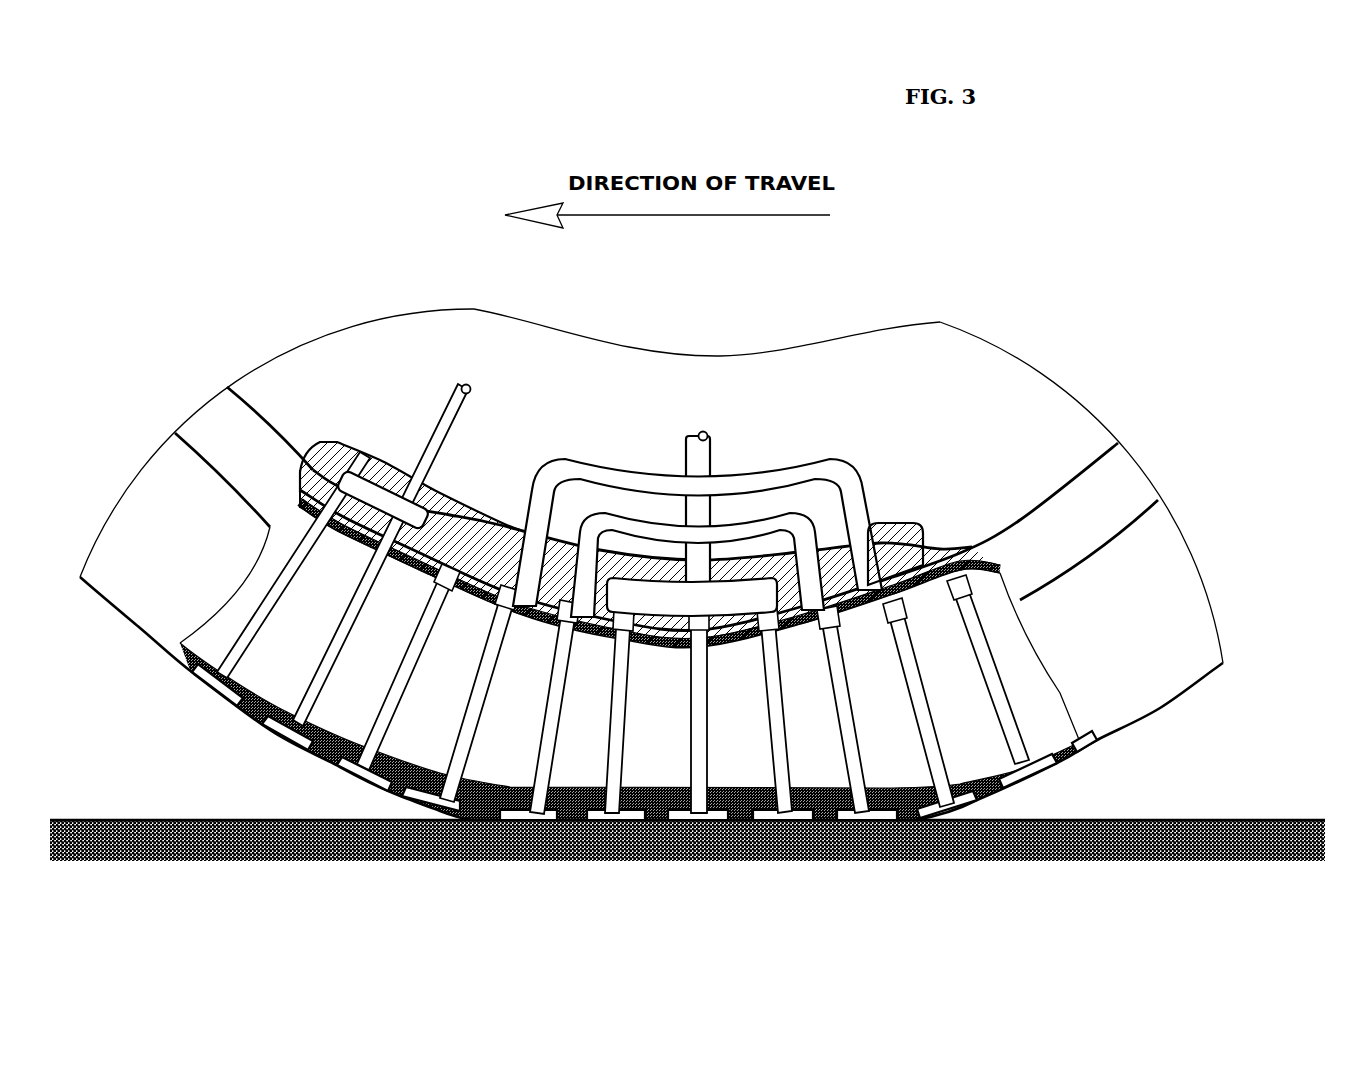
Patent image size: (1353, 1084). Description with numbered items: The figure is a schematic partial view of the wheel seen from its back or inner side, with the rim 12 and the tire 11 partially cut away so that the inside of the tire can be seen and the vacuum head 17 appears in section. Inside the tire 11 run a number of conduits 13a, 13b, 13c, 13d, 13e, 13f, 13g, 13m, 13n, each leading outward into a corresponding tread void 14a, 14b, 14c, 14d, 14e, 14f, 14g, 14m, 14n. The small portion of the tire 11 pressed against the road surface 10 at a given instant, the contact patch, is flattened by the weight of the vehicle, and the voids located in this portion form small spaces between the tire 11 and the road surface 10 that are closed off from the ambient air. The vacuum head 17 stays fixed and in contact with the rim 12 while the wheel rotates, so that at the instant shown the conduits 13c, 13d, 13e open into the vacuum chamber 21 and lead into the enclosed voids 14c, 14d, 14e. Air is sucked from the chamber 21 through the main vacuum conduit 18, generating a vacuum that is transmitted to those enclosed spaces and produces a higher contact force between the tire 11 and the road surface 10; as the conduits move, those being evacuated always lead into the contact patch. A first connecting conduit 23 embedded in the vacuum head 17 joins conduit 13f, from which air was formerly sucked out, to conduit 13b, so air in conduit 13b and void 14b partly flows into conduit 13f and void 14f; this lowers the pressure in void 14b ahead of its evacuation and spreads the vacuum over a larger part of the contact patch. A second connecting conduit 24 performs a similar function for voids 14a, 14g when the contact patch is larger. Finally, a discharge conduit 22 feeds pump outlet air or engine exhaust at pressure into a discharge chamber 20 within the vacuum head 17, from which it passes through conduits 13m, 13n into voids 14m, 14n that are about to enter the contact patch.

The road surface 10 is at (1217, 825).
The tire 11 is at (1207, 650).
The rim 12 is at (1120, 463).
The conduit 13a is at (490, 663).
The conduit 13b is at (558, 680).
The conduit 13c is at (624, 690).
The conduit 13d is at (702, 690).
The conduit 13e is at (776, 690).
The conduit 13f is at (845, 680).
The conduit 13g is at (912, 660).
The conduit 13m is at (296, 568).
The conduit 13n is at (360, 607).
The tread void 14a is at (437, 811).
The tread void 14b is at (530, 816).
The tread void 14c is at (608, 816).
The tread void 14d is at (690, 816).
The tread void 14e is at (778, 816).
The tread void 14f is at (860, 816).
The tread void 14g is at (940, 816).
The tread void 14m is at (205, 690).
The tread void 14n is at (285, 735).
The vacuum head 17 is at (482, 500).
The main vacuum conduit 18 is at (702, 450).
The discharge chamber 20 is at (373, 500).
The vacuum chamber 21 is at (722, 600).
The discharge conduit 22 is at (473, 398).
The first connecting conduit 23 is at (770, 520).
The second connecting conduit 24 is at (825, 468).